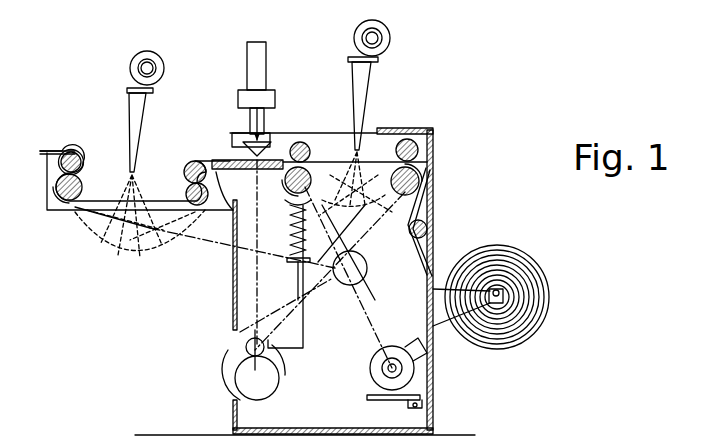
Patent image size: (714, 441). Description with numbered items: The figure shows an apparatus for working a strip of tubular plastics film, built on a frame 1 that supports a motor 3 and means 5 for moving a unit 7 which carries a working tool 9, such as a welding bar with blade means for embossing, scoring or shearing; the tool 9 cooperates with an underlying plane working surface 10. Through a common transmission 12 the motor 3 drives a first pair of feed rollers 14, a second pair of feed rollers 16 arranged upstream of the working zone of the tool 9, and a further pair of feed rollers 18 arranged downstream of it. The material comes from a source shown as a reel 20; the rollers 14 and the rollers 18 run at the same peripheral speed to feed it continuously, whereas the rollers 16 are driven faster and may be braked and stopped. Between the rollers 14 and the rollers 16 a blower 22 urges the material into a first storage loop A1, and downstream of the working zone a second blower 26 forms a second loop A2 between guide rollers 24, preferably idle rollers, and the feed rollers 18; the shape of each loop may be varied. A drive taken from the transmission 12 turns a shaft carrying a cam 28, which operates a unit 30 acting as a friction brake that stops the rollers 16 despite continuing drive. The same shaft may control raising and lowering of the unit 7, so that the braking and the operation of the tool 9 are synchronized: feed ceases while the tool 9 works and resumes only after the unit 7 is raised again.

The frame 1 is at (254, 424).
The motor 3 is at (415, 378).
The means for moving the unit 5 is at (258, 40).
The unit 7 is at (238, 96).
The working tool 9 is at (234, 160).
The working surface 10 is at (215, 230).
The transmission 12 is at (411, 211).
The first pair of feed rollers 14 is at (437, 160).
The second pair of feed rollers 16 is at (303, 136).
The further pair of feed rollers 18 is at (90, 164).
The reel 20 is at (479, 254).
The blower 22 is at (368, 72).
The guide rollers 24 is at (183, 178).
The second blower 26 is at (128, 97).
The cam 28 is at (233, 396).
The unit 30 is at (300, 284).
The first storage loop A1 is at (357, 190).
The second loop A2 is at (133, 223).